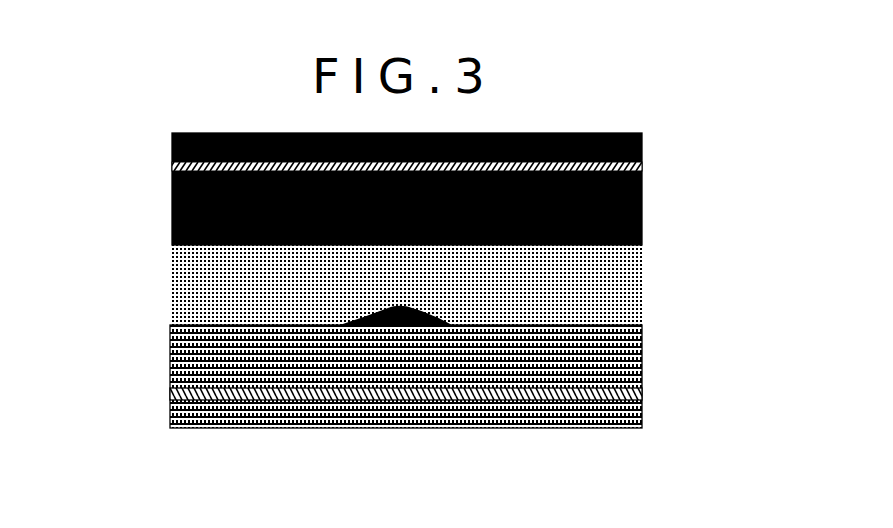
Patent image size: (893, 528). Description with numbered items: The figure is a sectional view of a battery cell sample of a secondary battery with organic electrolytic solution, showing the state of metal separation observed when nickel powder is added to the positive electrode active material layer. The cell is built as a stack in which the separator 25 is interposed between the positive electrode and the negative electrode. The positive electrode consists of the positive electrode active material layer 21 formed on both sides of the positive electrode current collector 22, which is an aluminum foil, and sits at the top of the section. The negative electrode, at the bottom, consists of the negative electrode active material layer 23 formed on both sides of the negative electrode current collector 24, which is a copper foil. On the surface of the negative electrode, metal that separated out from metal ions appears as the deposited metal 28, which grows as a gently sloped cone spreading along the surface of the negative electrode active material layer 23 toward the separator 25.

The active material layer for positive electrode 21 is at (642, 146).
The current collector for positive electrode 22 is at (172, 165).
The active material layer for negative electrode 23 is at (628, 350).
The current collector for negative electrode 24 is at (170, 392).
The separator 25 is at (635, 276).
The deposited metal 28 is at (420, 310).